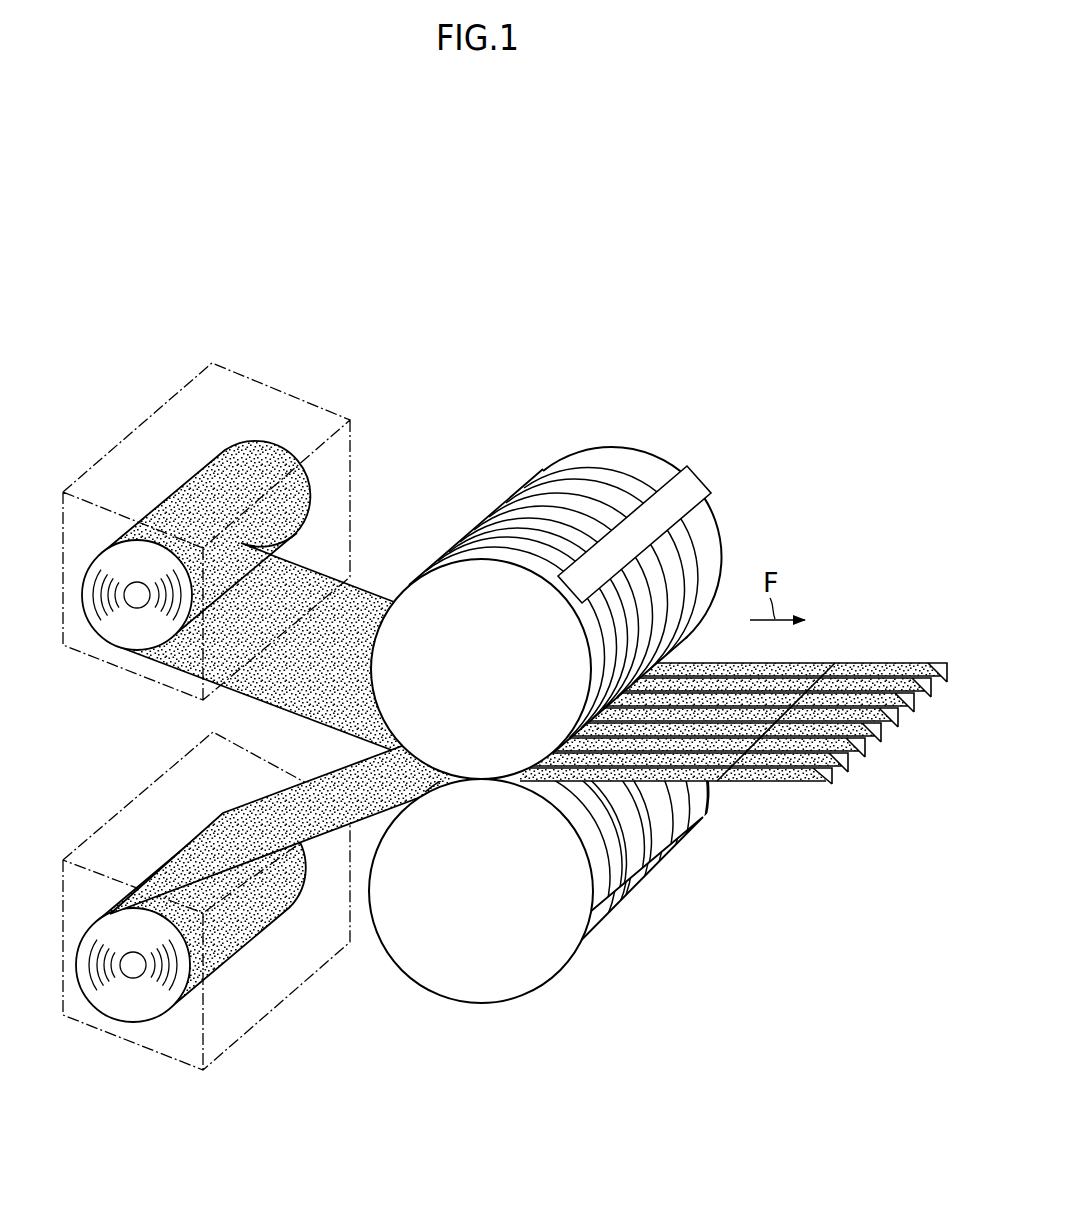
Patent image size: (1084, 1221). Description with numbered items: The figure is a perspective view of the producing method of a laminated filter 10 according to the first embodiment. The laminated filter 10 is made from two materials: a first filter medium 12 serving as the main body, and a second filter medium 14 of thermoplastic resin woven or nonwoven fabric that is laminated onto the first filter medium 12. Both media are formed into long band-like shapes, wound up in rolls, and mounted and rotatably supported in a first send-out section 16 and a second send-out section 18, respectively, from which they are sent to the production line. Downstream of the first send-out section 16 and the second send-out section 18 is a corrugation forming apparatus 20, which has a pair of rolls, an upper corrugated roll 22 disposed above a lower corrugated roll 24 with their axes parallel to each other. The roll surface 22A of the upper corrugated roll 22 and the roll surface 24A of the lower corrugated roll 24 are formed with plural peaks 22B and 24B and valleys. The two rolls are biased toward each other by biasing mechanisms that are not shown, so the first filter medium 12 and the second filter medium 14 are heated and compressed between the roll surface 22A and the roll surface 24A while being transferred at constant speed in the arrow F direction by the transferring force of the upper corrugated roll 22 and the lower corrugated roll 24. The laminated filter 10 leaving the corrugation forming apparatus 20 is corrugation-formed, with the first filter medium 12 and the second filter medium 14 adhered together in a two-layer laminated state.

The laminated filter 10 is at (890, 651).
The first filter medium 12 is at (200, 842).
The second filter medium 14 is at (345, 604).
The first send-out section 16 is at (125, 807).
The second send-out section 18 is at (258, 381).
The corrugation forming apparatus 20 is at (654, 334).
The upper corrugated roll 22 is at (576, 579).
The roll surface 22A is at (658, 472).
The peaks 22B is at (622, 462).
The lower corrugated roll 24 is at (583, 871).
The roll surface 24A is at (690, 885).
The peaks 24B is at (674, 896).